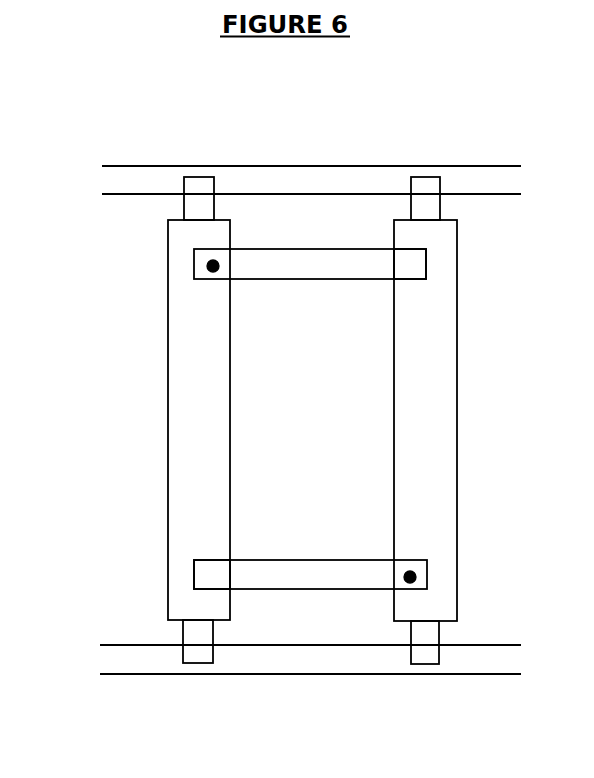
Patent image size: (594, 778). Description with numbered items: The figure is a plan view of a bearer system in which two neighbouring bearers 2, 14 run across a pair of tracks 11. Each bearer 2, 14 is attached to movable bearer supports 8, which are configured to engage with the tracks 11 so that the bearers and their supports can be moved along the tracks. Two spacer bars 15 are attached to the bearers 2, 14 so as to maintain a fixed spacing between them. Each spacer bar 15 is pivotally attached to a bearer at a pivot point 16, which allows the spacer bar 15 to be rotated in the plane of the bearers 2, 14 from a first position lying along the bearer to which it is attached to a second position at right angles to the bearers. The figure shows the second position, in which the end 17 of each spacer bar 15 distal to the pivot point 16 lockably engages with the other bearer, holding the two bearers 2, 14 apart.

The bearer 2 is at (204, 409).
The movable bearer support 8 is at (203, 206).
The track 11 is at (298, 174).
The bearer 14 is at (422, 390).
The spacer bar 15 is at (326, 262).
The pivot point 16 is at (205, 262).
The end of the spacer bar 17 is at (412, 265).